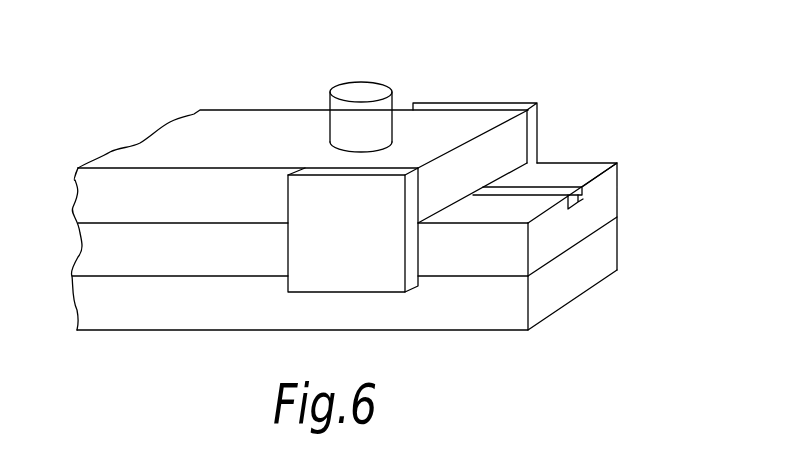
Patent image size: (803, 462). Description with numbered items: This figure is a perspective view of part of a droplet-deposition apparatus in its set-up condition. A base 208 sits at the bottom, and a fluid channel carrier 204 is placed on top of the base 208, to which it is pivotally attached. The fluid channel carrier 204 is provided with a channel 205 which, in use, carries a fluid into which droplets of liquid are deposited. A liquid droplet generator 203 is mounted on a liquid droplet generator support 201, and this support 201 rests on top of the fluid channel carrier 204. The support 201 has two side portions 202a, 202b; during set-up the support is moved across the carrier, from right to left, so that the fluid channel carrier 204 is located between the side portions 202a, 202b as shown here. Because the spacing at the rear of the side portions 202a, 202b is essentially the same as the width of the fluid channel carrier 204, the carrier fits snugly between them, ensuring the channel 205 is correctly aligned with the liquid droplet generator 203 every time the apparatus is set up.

The liquid droplet generator support 201 is at (450, 127).
The side portion 202a is at (387, 267).
The side portion 202b is at (530, 132).
The liquid droplet generator 203 is at (348, 113).
The fluid channel carrier 204 is at (607, 193).
The channel 205 is at (582, 196).
The base 208 is at (550, 297).